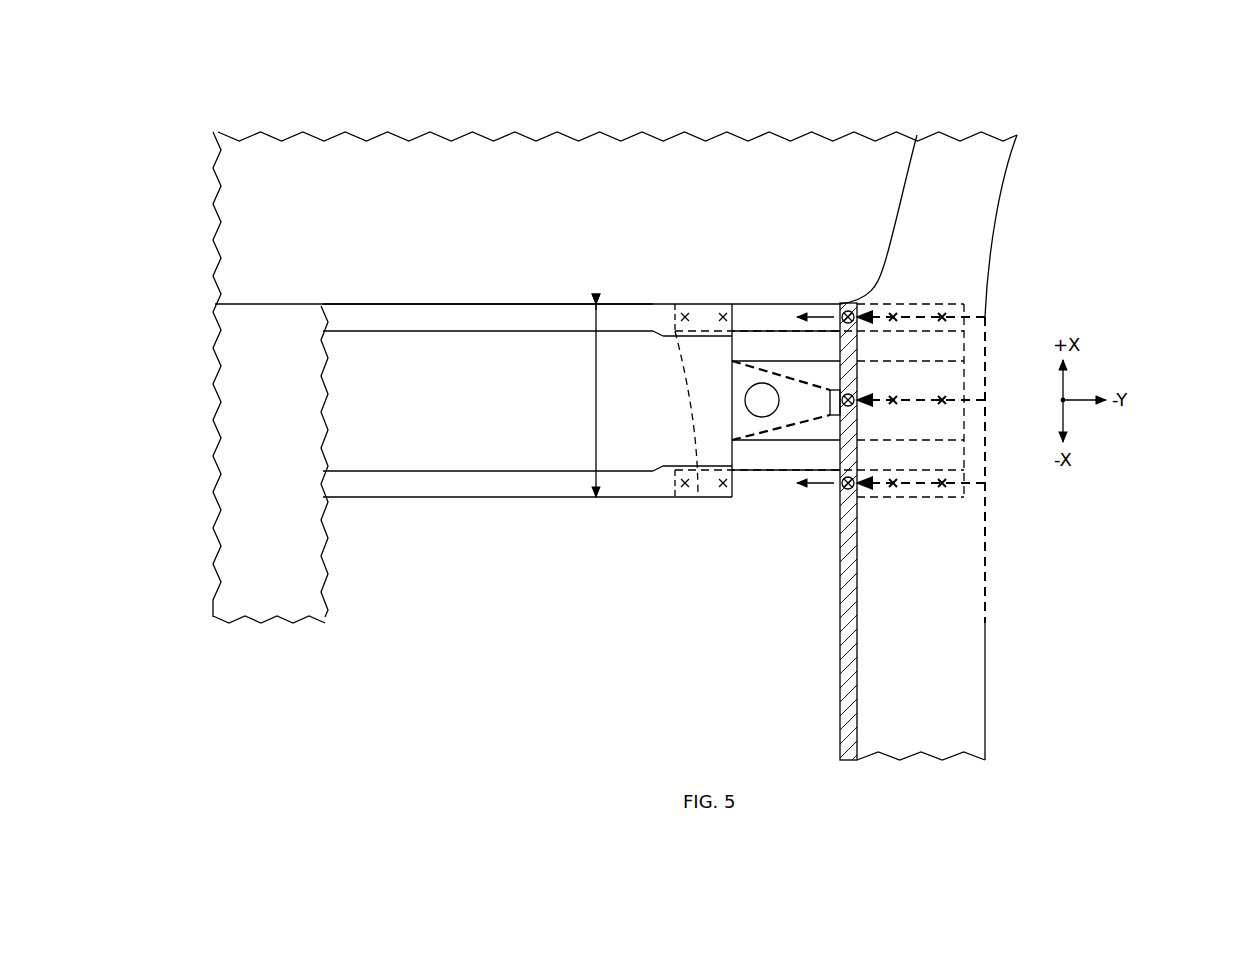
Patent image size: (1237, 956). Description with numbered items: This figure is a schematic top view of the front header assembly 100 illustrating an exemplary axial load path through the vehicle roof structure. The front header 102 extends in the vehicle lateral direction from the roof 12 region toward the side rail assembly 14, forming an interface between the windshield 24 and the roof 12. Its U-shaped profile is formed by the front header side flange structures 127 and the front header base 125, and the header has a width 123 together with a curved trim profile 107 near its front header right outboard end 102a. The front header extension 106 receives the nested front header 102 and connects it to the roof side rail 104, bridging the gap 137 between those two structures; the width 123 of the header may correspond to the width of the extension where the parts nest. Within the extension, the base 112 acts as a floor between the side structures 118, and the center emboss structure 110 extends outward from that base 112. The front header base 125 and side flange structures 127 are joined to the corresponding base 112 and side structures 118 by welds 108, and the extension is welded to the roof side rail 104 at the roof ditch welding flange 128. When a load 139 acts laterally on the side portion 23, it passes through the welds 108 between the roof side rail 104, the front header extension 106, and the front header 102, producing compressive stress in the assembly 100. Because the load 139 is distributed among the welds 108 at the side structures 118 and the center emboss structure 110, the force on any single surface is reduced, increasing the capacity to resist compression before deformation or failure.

The front header assembly 100 is at (372, 135).
The roof side rail 104 is at (984, 193).
The side rail assembly 14 is at (1066, 232).
The side portion 23 is at (1142, 242).
The windshield 24 is at (594, 233).
The roof 12 is at (272, 552).
The front header extension 106 is at (760, 295).
The front header 102 is at (432, 345).
The front header right outboard end 102a is at (556, 590).
The front header side flange structures 127 is at (489, 313).
The front header base 125 is at (426, 467).
The width 123 is at (595, 400).
The base 112 is at (748, 328).
The side structures 118 is at (788, 302).
The welds 108 is at (900, 316).
The center emboss structure 110 is at (801, 410).
The curved trim profile 107 is at (680, 394).
The roof ditch welding flange 128 is at (846, 640).
The gap 137 is at (826, 515).
The load 139 is at (987, 623).